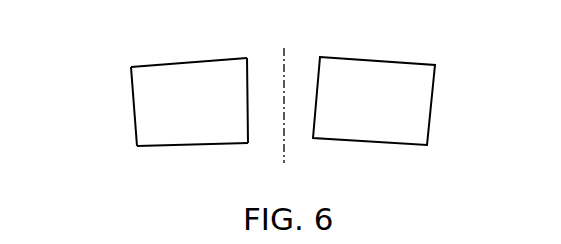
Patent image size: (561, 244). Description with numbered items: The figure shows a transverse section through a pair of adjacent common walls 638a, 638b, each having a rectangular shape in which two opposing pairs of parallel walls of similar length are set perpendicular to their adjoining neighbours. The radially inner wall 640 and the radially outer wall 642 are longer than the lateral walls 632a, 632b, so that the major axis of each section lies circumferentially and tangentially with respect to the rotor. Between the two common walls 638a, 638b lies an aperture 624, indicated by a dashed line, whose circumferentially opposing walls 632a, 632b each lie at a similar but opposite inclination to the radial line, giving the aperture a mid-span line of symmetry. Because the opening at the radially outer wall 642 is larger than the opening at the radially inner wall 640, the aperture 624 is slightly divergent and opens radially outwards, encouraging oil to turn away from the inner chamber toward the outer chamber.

The aperture 624 is at (272, 85).
The lateral wall 632a is at (245, 104).
The lateral wall 632b is at (86, 106).
The common wall 638a is at (141, 107).
The common wall 638b is at (403, 115).
The radially inner wall 640 is at (157, 147).
The radially outer wall 642 is at (167, 62).